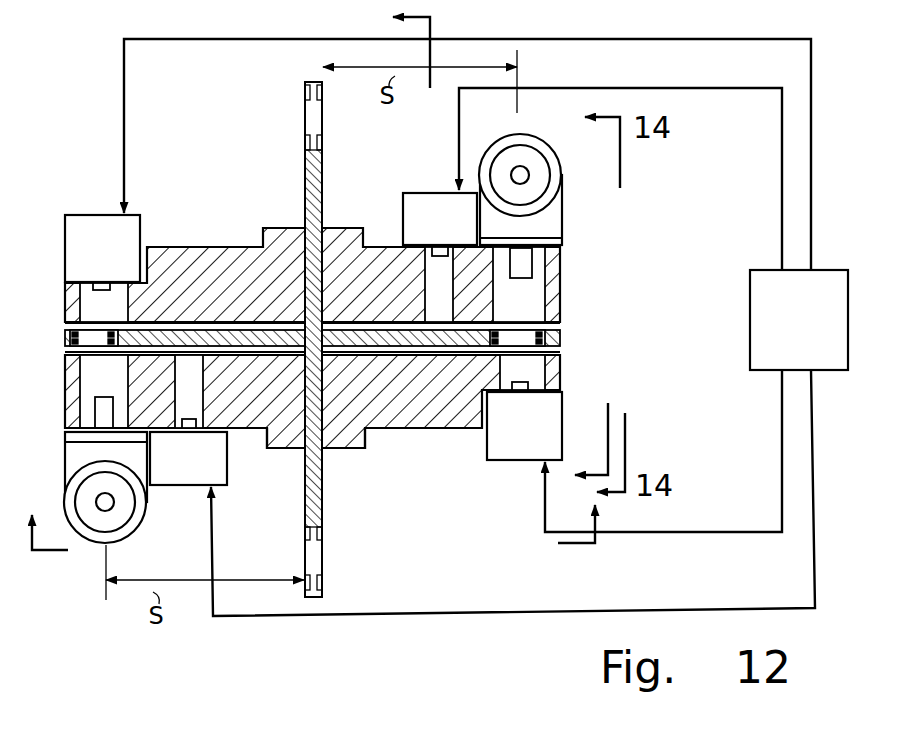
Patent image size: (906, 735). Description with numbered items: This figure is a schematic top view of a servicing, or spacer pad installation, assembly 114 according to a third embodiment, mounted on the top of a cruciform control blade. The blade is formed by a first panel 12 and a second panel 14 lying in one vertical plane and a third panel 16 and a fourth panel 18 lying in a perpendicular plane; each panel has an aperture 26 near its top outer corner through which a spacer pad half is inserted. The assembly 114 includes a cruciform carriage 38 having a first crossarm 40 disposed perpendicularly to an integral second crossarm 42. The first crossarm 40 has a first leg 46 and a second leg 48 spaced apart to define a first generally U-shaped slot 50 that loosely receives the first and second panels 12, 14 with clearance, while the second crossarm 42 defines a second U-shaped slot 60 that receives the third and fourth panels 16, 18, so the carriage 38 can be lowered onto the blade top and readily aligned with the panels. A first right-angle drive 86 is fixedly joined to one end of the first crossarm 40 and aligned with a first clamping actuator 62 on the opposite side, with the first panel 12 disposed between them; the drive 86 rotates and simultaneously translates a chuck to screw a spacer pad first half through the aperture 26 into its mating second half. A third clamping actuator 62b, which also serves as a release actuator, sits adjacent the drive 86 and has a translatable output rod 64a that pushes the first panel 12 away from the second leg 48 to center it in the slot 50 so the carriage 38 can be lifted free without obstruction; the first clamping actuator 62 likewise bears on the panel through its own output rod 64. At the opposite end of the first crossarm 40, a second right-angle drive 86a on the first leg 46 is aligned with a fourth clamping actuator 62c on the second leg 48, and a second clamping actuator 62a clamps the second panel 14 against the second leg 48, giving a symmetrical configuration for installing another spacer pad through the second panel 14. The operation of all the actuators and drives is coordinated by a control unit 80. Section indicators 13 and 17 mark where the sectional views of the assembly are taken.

The first panel 12 is at (563, 326).
The section line 13- 13 is at (305, 531).
The second panel 14 is at (66, 334).
The third panel 16 is at (304, 171).
The section line 17- 17 is at (478, 237).
The fourth panel 18 is at (325, 580).
The aperture 26 is at (323, 543).
The cruciform carriage 38 is at (208, 245).
The first crossarm 40 is at (565, 287).
The second crossarm 42 is at (353, 450).
The first leg 46 is at (421, 429).
The second leg 48 is at (563, 257).
The first U-shaped slot 50 is at (66, 352).
The second U-shaped slot 60 is at (303, 451).
The first clamping actuator 62 is at (524, 426).
The second clamping actuator 62a is at (188, 458).
The third clamping actuator 62b is at (440, 219).
The fourth clamping actuator 62c is at (102, 248).
The sensor slot 64 is at (546, 385).
The translatable output rod 64a is at (430, 262).
The control unit 80 is at (486, 327).
The right-angle drive 86 is at (557, 157).
The second right-angle drive 86a is at (132, 532).
The spacer pad installation assembly 114 is at (444, 487).